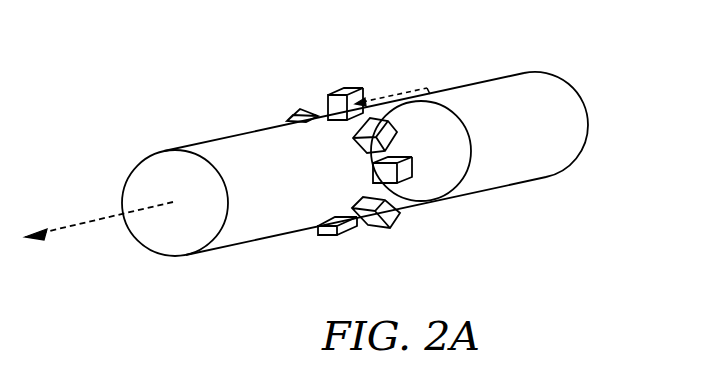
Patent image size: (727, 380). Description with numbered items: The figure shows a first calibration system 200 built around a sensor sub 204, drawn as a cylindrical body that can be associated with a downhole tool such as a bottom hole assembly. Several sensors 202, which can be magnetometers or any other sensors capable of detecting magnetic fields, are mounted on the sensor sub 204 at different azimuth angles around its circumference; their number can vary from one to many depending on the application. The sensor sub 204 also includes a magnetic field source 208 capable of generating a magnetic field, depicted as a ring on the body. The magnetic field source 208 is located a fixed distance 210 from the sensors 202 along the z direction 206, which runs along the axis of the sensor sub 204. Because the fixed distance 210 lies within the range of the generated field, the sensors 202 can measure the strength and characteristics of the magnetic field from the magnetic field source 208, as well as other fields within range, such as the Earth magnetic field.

The first calibration system 200 is at (158, 80).
The sensors 202 is at (295, 108).
The sensor sub 204 is at (587, 107).
The z direction 206 is at (77, 222).
The magnetic field source 208 is at (458, 115).
The fixed distance 210 is at (415, 87).